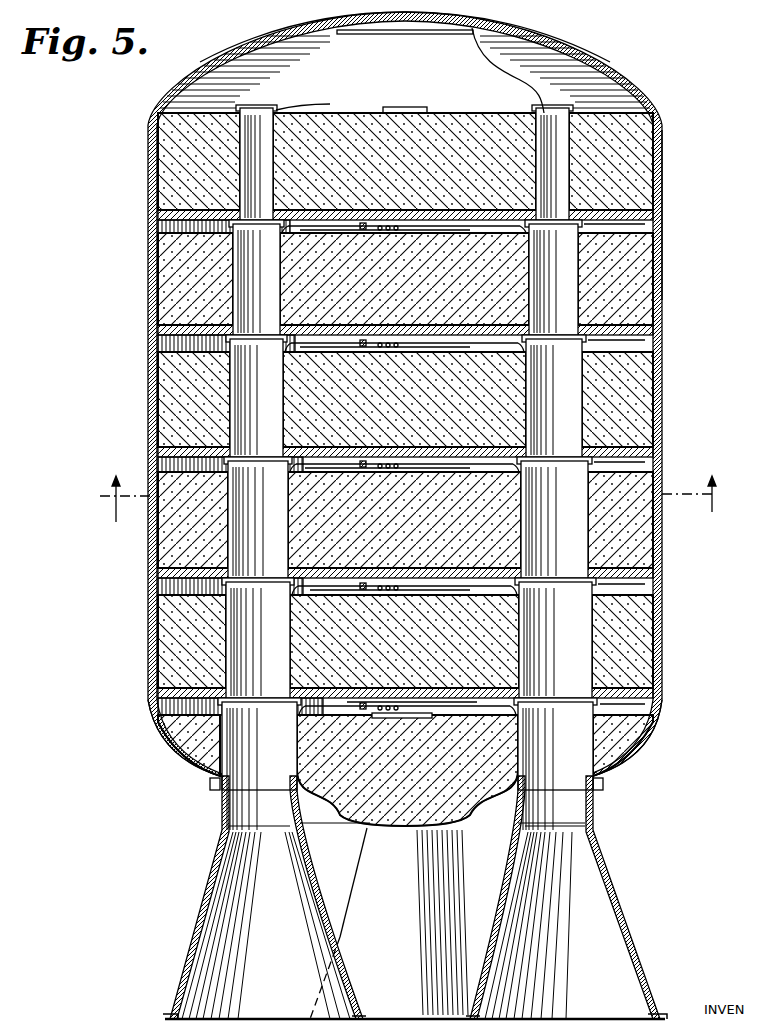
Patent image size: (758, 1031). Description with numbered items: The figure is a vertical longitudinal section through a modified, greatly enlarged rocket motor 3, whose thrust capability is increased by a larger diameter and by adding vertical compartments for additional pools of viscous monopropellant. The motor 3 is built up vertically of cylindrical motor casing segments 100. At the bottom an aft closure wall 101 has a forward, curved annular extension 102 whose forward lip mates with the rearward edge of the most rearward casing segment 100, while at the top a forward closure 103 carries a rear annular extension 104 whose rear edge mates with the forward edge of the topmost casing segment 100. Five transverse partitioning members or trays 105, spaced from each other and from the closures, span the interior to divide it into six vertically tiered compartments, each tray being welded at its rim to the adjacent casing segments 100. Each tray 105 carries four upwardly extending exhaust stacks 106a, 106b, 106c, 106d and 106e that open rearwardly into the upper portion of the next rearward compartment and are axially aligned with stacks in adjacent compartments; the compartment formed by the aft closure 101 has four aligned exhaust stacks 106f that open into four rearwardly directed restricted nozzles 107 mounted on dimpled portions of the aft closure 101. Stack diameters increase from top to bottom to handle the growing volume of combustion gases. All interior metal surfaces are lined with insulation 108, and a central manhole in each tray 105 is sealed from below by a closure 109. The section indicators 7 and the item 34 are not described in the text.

The motor 3 is at (148, 259).
The section line 7- 7 is at (414, 498).
The conduit 34 is at (381, 33).
The cylindrical motor casing segment 100 is at (664, 297).
The aft closure wall 101 is at (421, 840).
The forward curved annular extension 102 is at (656, 744).
The forward closure 103 is at (598, 64).
The rear annular extension 104 is at (663, 134).
The partitioning member or tray 105 is at (643, 212).
The exhaust stack 106a is at (296, 108).
The exhaust stack 106b is at (290, 233).
The exhaust stack 106c is at (286, 350).
The exhaust stack 106d is at (276, 488).
The exhaust stack 106e is at (292, 613).
The exhaust stack 106f is at (286, 720).
The restricted nozzle 107 is at (358, 883).
The insulation 108 is at (655, 166).
The closure 109 is at (395, 438).